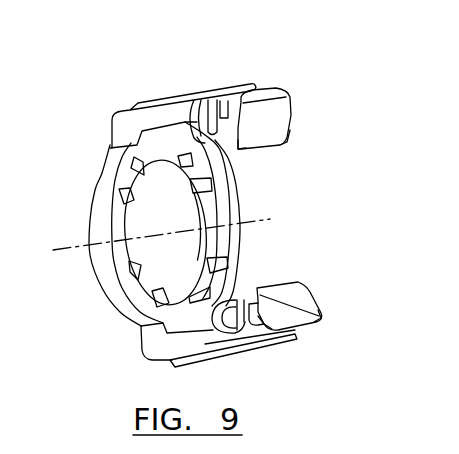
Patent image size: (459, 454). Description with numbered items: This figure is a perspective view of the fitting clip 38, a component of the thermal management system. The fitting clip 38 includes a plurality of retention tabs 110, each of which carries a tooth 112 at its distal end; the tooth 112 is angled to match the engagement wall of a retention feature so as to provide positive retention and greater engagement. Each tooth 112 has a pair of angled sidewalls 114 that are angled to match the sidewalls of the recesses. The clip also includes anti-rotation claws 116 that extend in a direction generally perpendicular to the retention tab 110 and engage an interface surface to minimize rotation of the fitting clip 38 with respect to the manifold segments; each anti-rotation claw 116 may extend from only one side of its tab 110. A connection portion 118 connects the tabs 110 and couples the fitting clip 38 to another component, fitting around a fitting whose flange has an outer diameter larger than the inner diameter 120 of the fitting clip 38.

The fitting clip 38 is at (92, 346).
The retention tab 110 is at (279, 91).
The tooth 112 is at (262, 125).
The angled sidewall 114 is at (286, 135).
The anti-rotation claw 116 is at (198, 122).
The connection portion 118 is at (112, 178).
The inner diameter 120 is at (136, 267).